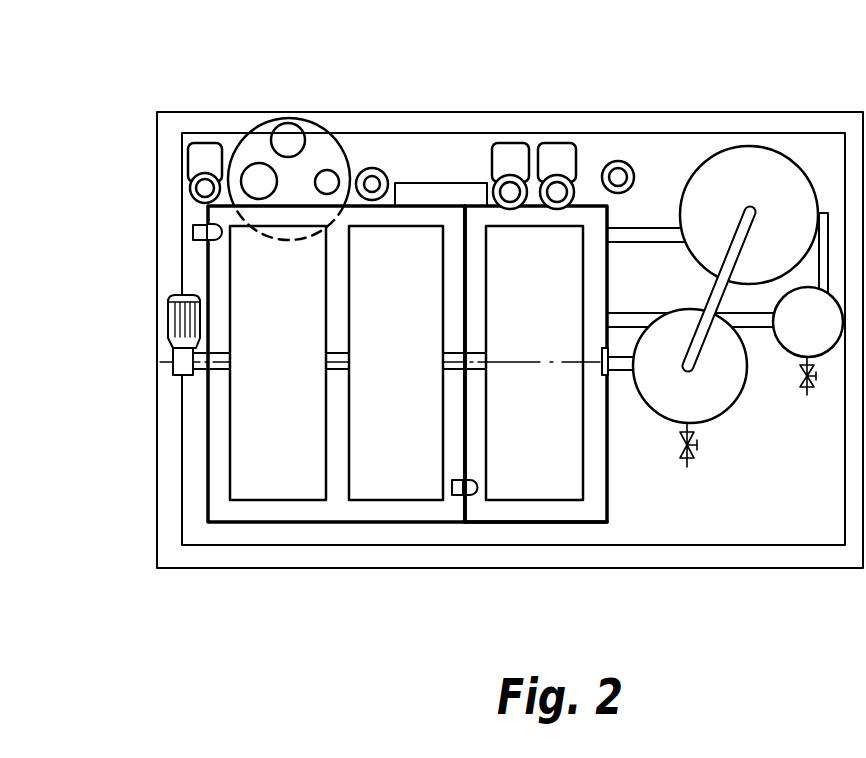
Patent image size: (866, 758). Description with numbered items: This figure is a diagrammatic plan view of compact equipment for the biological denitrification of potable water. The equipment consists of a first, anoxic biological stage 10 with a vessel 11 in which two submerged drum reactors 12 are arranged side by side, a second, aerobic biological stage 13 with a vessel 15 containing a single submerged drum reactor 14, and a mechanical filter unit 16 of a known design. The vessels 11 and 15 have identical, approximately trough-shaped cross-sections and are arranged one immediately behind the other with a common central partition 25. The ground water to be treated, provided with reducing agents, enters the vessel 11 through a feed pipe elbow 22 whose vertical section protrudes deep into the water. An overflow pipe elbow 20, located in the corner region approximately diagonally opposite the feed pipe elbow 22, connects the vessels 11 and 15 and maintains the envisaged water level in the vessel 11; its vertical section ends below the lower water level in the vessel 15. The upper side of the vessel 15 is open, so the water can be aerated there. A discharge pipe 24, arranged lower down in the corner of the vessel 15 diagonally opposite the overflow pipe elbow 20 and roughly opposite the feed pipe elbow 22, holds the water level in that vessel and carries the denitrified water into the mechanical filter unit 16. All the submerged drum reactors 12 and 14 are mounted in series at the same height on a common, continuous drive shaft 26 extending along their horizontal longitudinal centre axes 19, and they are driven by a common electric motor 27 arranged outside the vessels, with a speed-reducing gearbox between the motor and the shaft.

The anoxic biological stage 10 is at (399, 215).
The vessel 11 is at (217, 463).
The submerged drum reactors 12 is at (265, 281).
The aerobic biological stage 13 is at (570, 216).
The submerged drum reactor 14 is at (552, 480).
The vessel 15 is at (497, 510).
The mechanical filter unit 16 is at (762, 173).
The horizontal longitudinal centre axes 19 is at (257, 363).
The overflow pipe elbow 20 is at (453, 493).
The feed pipe elbow 22 is at (193, 232).
The discharge pipe 24 is at (640, 233).
The common central partition 25 is at (463, 508).
The drive shaft 26 is at (333, 367).
The electric motor 27 is at (185, 322).